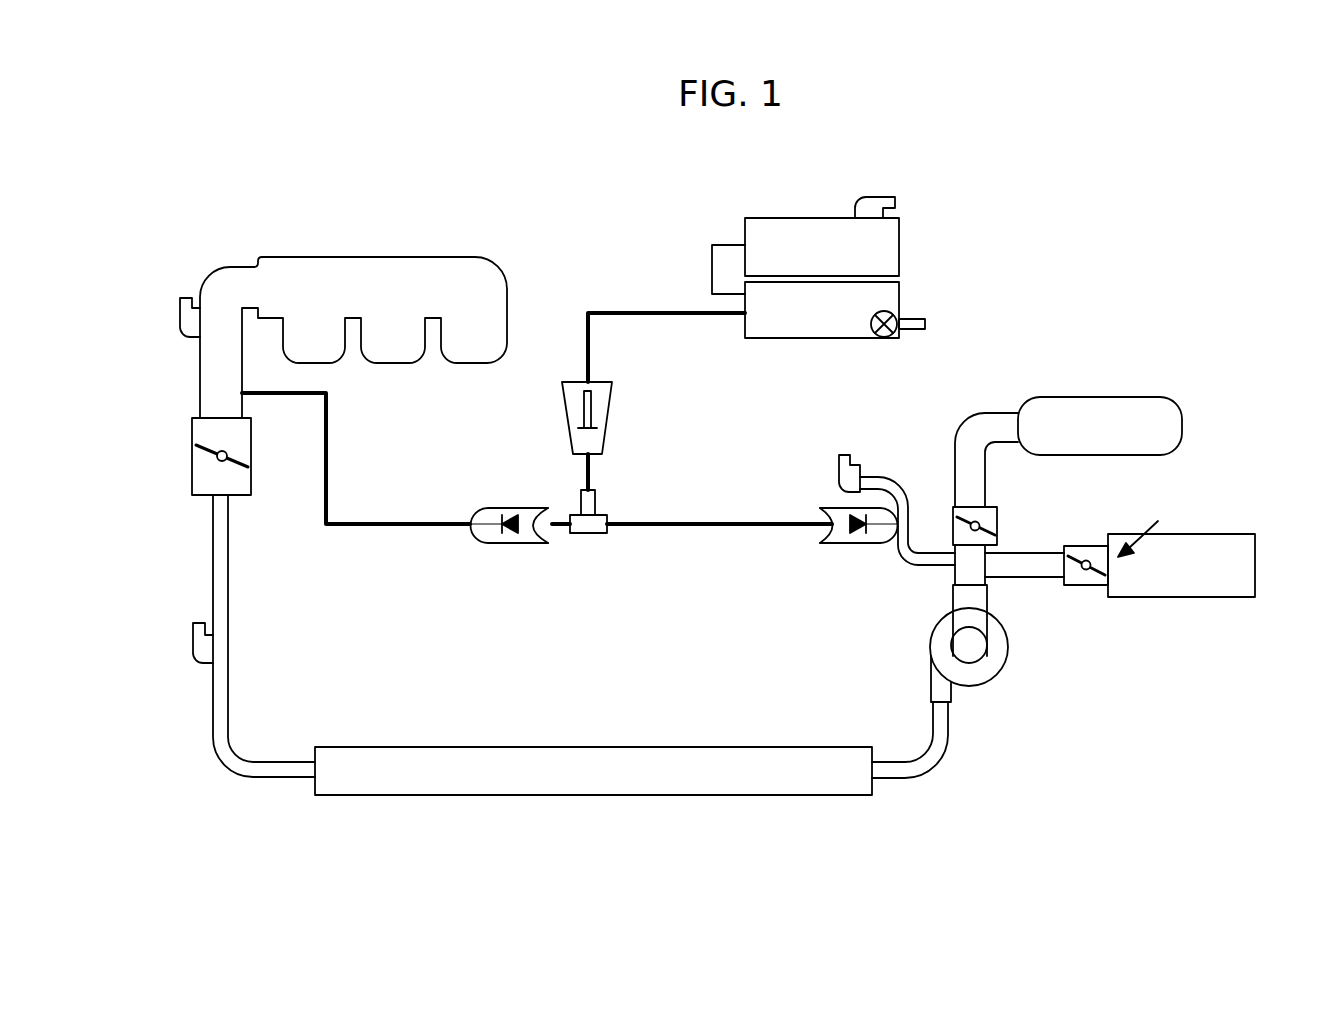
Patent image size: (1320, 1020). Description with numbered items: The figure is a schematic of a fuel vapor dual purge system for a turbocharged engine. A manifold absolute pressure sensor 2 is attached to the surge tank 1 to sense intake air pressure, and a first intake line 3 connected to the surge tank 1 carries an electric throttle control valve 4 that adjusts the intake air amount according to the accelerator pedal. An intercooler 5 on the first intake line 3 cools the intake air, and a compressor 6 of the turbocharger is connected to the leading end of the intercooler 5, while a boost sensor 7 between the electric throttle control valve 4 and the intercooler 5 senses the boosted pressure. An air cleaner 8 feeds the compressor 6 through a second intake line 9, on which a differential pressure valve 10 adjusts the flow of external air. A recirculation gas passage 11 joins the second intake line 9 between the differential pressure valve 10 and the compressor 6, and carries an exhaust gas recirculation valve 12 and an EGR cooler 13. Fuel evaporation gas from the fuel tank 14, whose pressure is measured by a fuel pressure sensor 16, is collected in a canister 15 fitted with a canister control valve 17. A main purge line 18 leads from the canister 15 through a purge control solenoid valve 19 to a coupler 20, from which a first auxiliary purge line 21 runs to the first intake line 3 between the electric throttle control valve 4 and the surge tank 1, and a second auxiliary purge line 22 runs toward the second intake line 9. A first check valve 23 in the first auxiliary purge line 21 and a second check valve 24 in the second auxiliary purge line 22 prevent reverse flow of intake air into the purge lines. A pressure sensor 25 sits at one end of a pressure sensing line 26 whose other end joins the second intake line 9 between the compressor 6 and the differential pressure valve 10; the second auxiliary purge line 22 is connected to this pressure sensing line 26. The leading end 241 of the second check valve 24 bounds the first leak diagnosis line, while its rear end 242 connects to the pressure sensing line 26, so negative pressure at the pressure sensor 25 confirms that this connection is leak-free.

The surge tank 1 is at (400, 257).
The manifold absolute pressure (MAP) sensor 2 is at (183, 298).
The first intake line 3 is at (213, 548).
The electric throttle control (ETC) valve 4 is at (252, 485).
The intercooler 5 is at (575, 747).
The compressor 6 is at (1003, 672).
The boost sensor 7 is at (193, 643).
The air cleaner 8 is at (1100, 397).
The second intake line 9 is at (990, 413).
The differential pressure valve 10 is at (997, 512).
The recirculation gas passage 11 is at (1025, 578).
The exhaust gas recirculation (EGR) valve 12 is at (1083, 586).
The EGR cooler 13 is at (1182, 598).
The fuel tank 14 is at (900, 236).
The canister 15 is at (900, 292).
The fuel pressure sensor 16 is at (897, 200).
The canister control valve (CCV) 17 is at (871, 335).
The main purge line 18 is at (640, 313).
The purge control solenoid valve (PCSV) 19 is at (572, 382).
The coupler 20 is at (588, 535).
The first auxiliary purge line 21 is at (428, 523).
The second auxiliary purge line 22 is at (722, 532).
The first check valve 23 is at (510, 545).
The second check valve 24 is at (842, 545).
The leading end of the second check valve 241 is at (830, 526).
The rear end of the second check valve 242 is at (902, 543).
The pressure sensor 25 is at (845, 455).
The pressure sensing line 26 is at (922, 553).